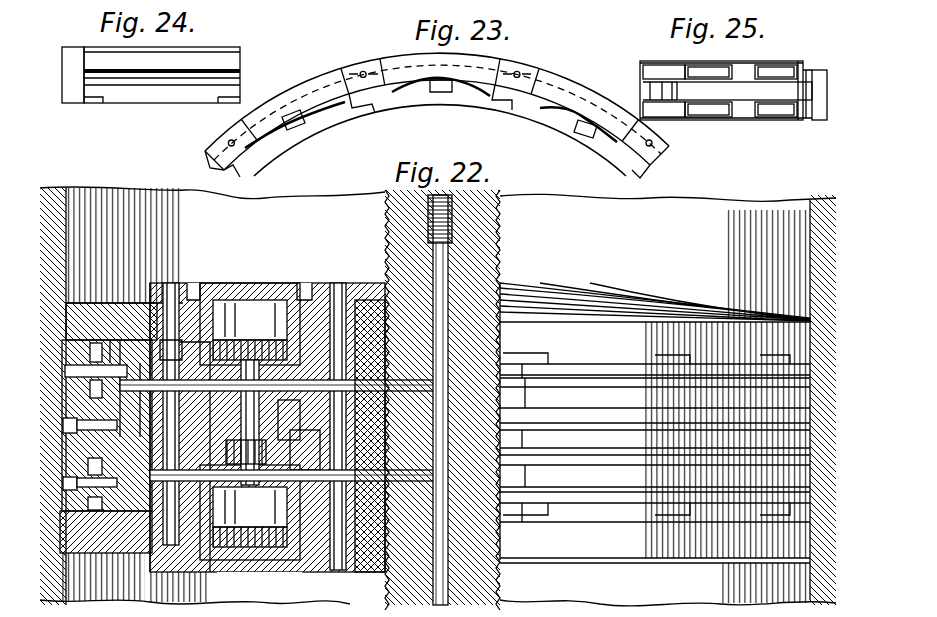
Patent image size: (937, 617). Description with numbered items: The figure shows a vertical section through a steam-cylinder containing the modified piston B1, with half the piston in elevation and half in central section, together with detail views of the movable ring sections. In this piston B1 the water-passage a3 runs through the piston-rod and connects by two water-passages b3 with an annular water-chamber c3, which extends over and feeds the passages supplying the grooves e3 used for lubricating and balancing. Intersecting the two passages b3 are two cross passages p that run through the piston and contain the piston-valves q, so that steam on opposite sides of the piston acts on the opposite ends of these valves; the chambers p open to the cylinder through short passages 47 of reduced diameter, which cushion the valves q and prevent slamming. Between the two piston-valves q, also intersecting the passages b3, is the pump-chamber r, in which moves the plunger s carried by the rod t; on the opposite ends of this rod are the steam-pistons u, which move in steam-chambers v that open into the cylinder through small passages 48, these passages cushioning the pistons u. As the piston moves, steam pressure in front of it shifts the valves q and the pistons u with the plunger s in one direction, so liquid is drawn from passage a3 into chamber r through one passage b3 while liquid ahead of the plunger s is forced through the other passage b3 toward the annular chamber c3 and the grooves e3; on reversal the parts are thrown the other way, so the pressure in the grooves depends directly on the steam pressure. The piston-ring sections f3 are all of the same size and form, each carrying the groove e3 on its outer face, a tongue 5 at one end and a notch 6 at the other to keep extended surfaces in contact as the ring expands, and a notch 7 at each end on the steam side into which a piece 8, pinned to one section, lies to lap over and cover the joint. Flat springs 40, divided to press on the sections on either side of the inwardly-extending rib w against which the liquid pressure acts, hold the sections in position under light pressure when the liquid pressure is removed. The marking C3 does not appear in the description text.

In FIG. 24, the tongue 5 is at (73, 75).
In FIG. 23, the tongue 5 is at (217, 166).
In FIG. 23, the notch 6 is at (647, 169).
In FIG. 24, the notch 7 is at (95, 103).
In FIG. 23, the notch 7 is at (670, 142).
In FIG. 24, the piece 8 is at (215, 110).
In FIG. 23, the piece 8 is at (536, 74).
In FIG. 22, the piece 8 is at (775, 525).
In FIG. 23, the flat springs 40 is at (548, 130).
In FIG. 25, the flat springs 40 is at (704, 108).
In FIG. 22, the short passages 47 is at (160, 550).
In FIG. 22, the small passages 48 is at (250, 560).
In FIG. 22, the cross passages p is at (345, 300).
In FIG. 22, the piston-valves q is at (620, 440).
In FIG. 22, the pump-chamber r is at (305, 450).
In FIG. 22, the plunger s is at (246, 422).
In FIG. 22, the rod t is at (289, 420).
In FIG. 22, the steam-pistons u is at (250, 443).
In FIG. 22, the steam-chambers v is at (250, 413).
In FIG. 23, the inwardly-extending rib w is at (480, 108).
In FIG. 25, the inwardly-extending rib w is at (727, 91).
In FIG. 22, the water-passage a3 is at (445, 288).
In FIG. 22, the water-passages b3 is at (420, 476).
In FIG. 22, the annular water-chamber c3 is at (97, 425).
In FIG. 22, the carrier block C3 is at (106, 556).
In FIG. 24, the grooves e3 is at (182, 82).
In FIG. 23, the grooves e3 is at (330, 62).
In FIG. 22, the grooves e3 is at (338, 396).
In FIG. 24, the sections f3 is at (248, 40).
In FIG. 23, the sections f3 is at (590, 68).
In FIG. 25, the sections f3 is at (805, 60).
In FIG. 22, the sections f3 is at (338, 415).
In FIG. 22, the piston B1 is at (590, 298).